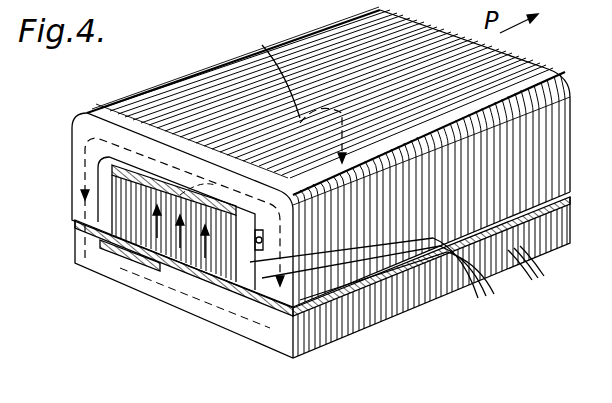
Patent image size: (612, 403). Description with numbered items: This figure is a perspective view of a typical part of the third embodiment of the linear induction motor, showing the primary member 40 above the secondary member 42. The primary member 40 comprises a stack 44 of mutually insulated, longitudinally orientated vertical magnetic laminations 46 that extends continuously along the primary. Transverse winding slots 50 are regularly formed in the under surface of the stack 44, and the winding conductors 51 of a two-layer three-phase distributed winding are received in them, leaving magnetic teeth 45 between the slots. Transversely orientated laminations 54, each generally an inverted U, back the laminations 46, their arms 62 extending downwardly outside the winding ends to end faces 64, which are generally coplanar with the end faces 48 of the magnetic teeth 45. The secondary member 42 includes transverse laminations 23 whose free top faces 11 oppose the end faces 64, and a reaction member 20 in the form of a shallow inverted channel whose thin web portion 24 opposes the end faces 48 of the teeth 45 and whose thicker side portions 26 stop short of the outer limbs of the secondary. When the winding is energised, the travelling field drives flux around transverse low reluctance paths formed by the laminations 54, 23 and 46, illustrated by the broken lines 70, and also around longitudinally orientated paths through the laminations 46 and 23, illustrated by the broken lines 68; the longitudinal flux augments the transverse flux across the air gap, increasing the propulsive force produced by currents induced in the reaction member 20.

The free top faces 11 is at (75, 238).
The reaction member 20 is at (155, 262).
The laminations 23 is at (533, 275).
The web portion 24 is at (172, 262).
The thicker side portions 26 is at (130, 250).
The primary member 40 is at (126, 94).
The secondary member 42 is at (251, 341).
The stack 44 is at (216, 270).
The magnetic teeth 45 is at (380, 298).
The vertical magnetic laminations 46 is at (150, 255).
The end faces 48 is at (246, 290).
The transverse winding slots 50 is at (262, 300).
The winding conductors 51 is at (412, 285).
The transversely orientated laminations 54 is at (375, 276).
The arms 62 is at (75, 178).
The end faces 64 is at (75, 205).
The broken lines 68 is at (268, 69).
The broken lines 70 is at (140, 230).